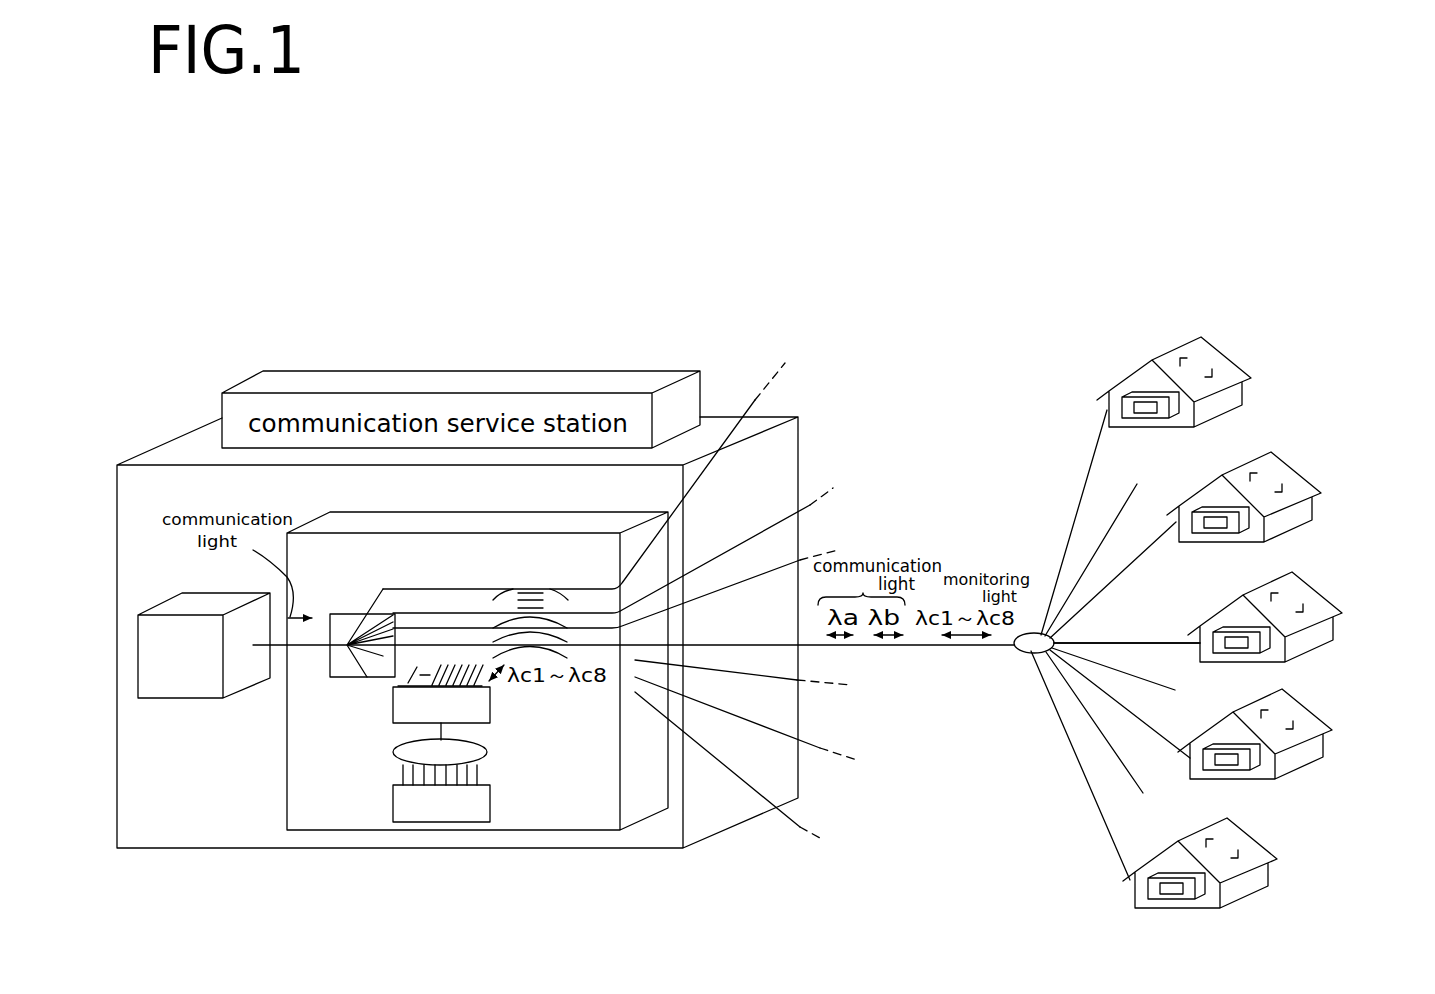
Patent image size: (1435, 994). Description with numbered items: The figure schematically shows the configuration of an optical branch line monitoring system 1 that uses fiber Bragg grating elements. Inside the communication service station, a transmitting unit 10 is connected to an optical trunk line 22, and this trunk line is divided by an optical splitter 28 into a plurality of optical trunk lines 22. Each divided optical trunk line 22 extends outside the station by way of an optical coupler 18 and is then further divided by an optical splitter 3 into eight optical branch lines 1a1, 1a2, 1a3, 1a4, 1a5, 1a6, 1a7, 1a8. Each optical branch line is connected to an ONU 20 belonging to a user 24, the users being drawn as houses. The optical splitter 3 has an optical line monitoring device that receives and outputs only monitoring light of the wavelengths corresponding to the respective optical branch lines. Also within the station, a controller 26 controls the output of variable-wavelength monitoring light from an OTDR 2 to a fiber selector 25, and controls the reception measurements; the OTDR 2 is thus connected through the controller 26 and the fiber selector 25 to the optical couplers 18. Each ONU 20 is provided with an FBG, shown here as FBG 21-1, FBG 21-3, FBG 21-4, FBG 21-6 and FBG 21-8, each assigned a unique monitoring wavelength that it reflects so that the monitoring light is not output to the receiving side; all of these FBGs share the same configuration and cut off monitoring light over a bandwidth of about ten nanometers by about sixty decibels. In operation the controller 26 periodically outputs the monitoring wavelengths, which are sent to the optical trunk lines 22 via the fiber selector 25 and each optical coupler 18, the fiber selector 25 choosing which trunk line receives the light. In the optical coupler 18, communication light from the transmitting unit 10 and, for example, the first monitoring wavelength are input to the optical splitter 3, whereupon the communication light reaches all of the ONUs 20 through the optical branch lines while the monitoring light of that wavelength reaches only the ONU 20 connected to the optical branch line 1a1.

The optical branch line monitoring system 1 is at (1052, 441).
The optical branch line 1a1 is at (1065, 535).
The optical branch line 1a2 is at (1112, 523).
The optical branch line 1a3 is at (1126, 569).
The optical branch line 1a4 is at (1127, 641).
The optical branch line 1a5 is at (1117, 669).
The optical branch line 1a6 is at (1110, 696).
The optical branch line 1a7 is at (1100, 730).
The optical branch line 1a8 is at (1070, 747).
The OTDR 2 is at (490, 805).
The optical splitter 3 is at (1022, 652).
The transmitting unit 10 is at (190, 690).
The optical coupler 18 is at (530, 588).
The ONU 20 is at (1137, 395).
The FBG 21-1 is at (1153, 405).
The FBG 21-3 is at (1223, 520).
The FBG 21-4 is at (1241, 640).
The FBG 21-6 is at (1231, 757).
The FBG 21-8 is at (1176, 886).
The optical trunk line 22 is at (310, 647).
The user 24 is at (1232, 362).
The fiber selector 25 is at (490, 710).
The controller 26 is at (482, 748).
The optical splitter 28 is at (350, 613).